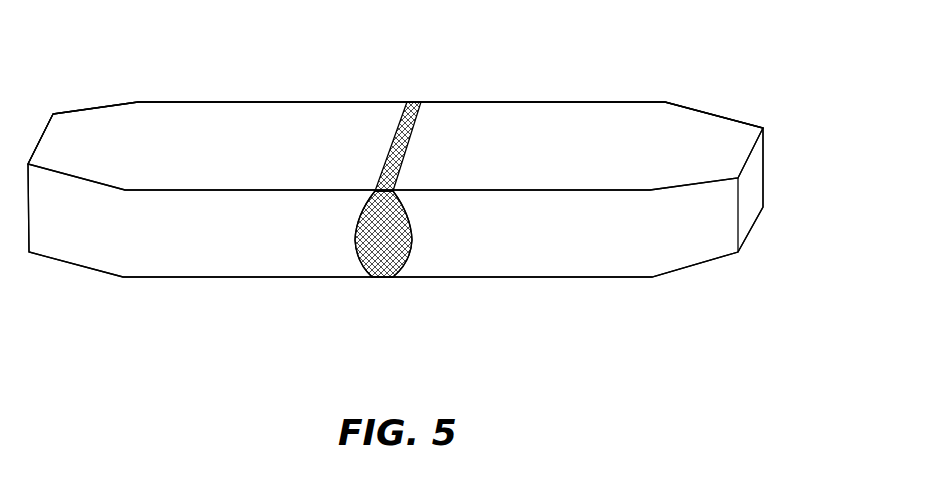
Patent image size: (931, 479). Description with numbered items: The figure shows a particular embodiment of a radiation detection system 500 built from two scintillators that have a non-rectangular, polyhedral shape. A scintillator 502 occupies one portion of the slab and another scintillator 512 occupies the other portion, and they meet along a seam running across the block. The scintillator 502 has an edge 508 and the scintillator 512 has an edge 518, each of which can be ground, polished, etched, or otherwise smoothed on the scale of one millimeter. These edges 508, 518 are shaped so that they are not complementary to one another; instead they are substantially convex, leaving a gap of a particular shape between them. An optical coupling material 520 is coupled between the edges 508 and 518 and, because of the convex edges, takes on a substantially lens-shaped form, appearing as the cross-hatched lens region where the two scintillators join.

The radiation detection system 500 is at (87, 32).
The scintillator 502 is at (228, 78).
The scintillator 512 is at (559, 80).
The edge 508 is at (345, 242).
The edge 518 is at (424, 238).
The optical coupling material 520 is at (380, 284).